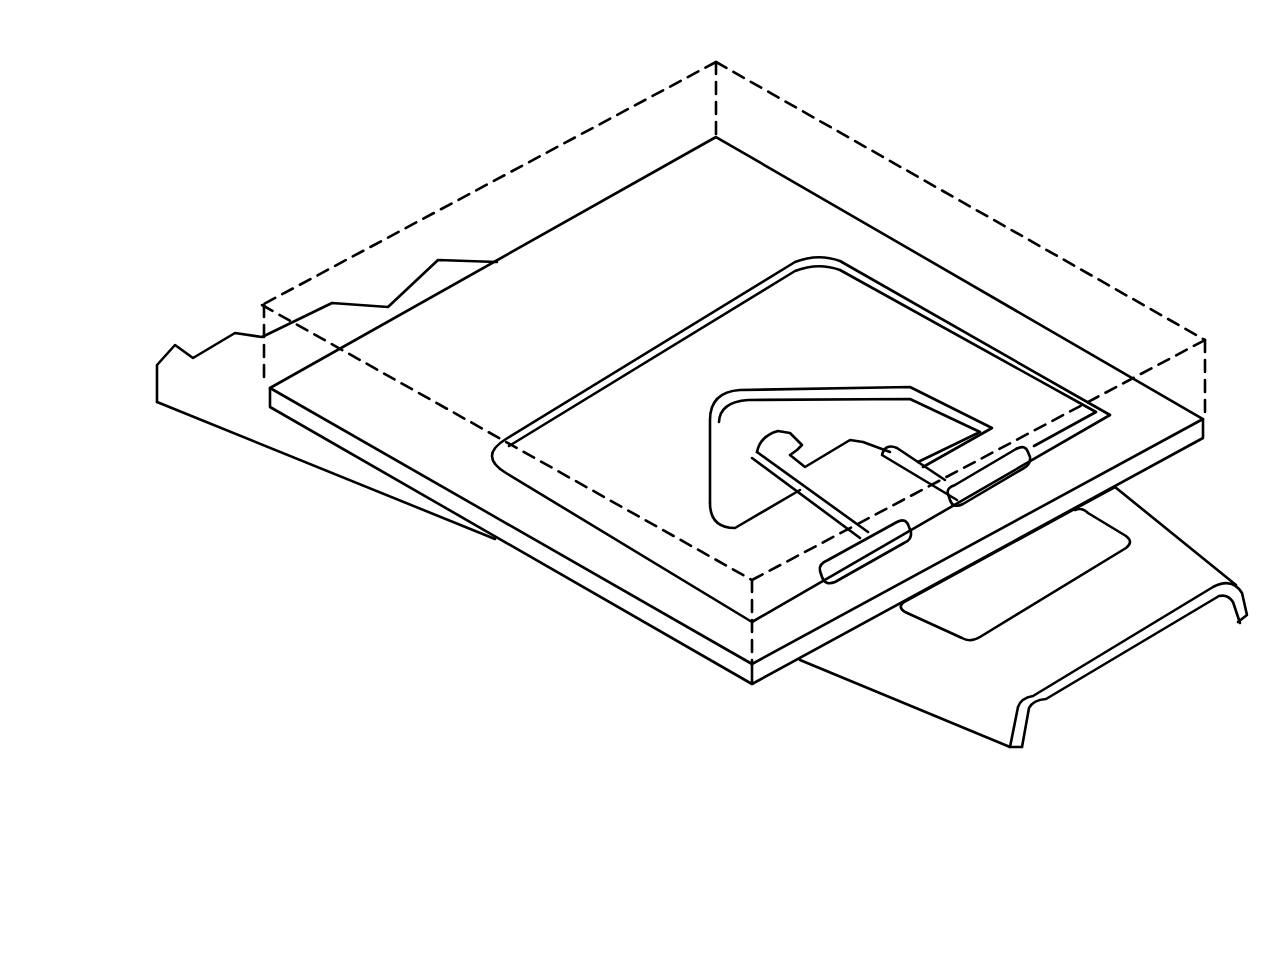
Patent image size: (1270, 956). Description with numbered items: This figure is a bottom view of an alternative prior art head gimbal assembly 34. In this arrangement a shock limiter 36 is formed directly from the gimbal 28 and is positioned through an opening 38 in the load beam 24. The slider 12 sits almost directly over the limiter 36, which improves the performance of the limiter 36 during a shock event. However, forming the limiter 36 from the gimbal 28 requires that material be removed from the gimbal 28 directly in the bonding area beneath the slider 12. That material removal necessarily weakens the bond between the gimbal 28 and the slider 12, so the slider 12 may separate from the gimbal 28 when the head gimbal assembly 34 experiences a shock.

The head gimbal assembly 34 is at (486, 151).
The slider 12 is at (968, 245).
The load beam 24 is at (880, 662).
The gimbal 28 is at (738, 217).
The shock limiter 36 is at (772, 453).
The opening 38 is at (828, 410).